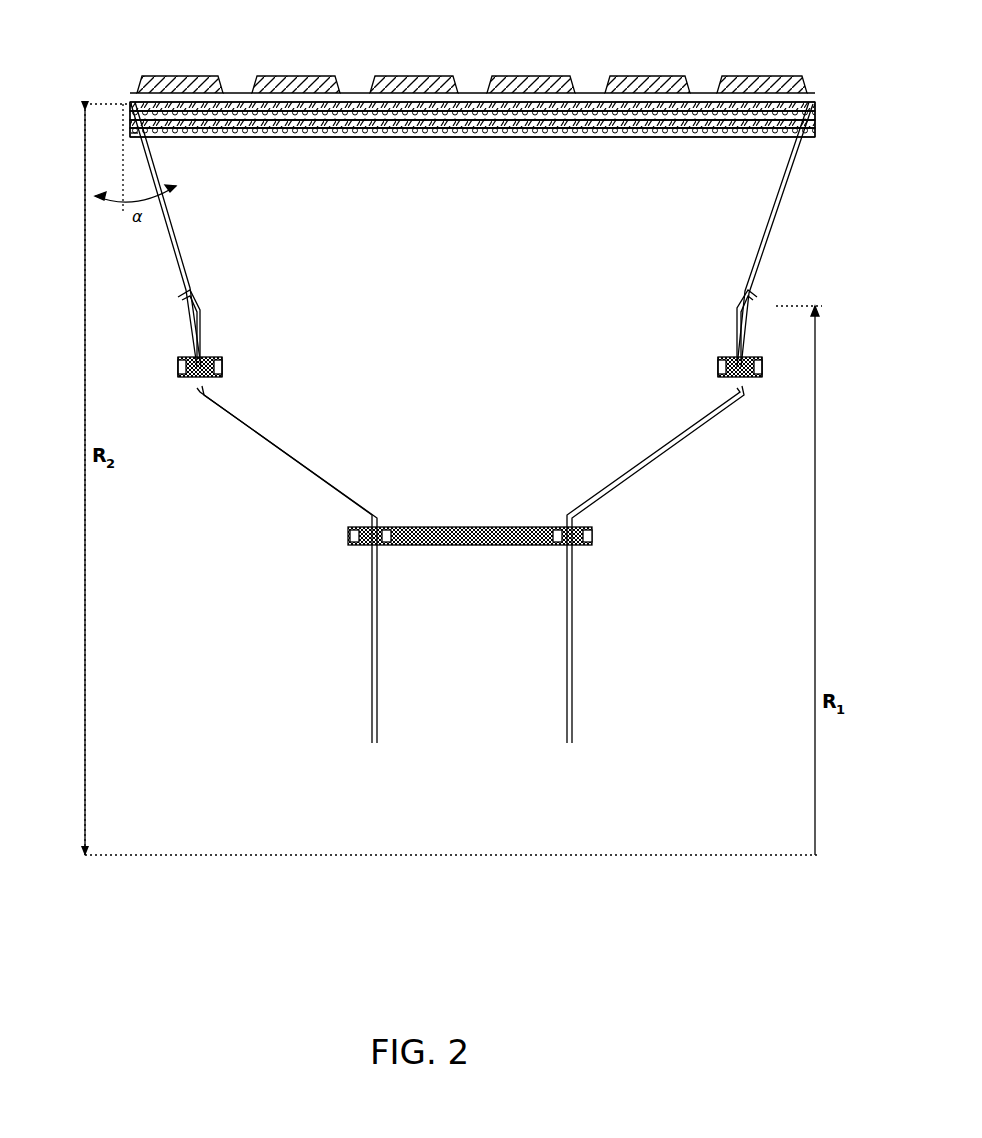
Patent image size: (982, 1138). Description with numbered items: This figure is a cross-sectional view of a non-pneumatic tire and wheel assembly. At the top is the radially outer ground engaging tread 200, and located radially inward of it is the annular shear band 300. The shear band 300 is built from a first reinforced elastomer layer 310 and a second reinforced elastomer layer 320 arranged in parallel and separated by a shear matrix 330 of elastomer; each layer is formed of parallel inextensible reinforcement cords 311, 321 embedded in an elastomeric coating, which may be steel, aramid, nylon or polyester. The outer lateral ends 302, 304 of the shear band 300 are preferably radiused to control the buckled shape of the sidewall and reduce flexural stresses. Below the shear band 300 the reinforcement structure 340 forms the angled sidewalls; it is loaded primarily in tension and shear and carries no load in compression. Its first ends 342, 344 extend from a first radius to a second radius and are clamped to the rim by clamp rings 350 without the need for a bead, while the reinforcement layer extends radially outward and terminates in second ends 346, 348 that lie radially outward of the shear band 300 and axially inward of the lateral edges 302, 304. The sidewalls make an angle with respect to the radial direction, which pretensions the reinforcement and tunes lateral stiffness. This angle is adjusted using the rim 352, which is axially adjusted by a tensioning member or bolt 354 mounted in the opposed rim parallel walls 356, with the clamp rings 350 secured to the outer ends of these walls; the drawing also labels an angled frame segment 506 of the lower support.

The tread 200 is at (443, 78).
The shear band 300 is at (478, 145).
The outer lateral end of shear band 302 is at (815, 101).
The outer lateral end of shear band 304 is at (135, 101).
The first reinforced elastomer layer 310 is at (296, 130).
The reinforcement cords 311 is at (383, 130).
The second reinforced elastomer layer 320 is at (357, 130).
The reinforcement cords 321 is at (418, 130).
The shear matrix 330 is at (636, 130).
The reinforcement structure 340 is at (180, 246).
The first end of reinforcement structure 342 is at (765, 300).
The first end of reinforcement structure 344 is at (190, 312).
The second end of reinforcement layer 346 is at (548, 78).
The second end of reinforcement layer 348 is at (395, 78).
The clamp rings 350 is at (183, 298).
The rim 352 is at (290, 500).
The tensioning member or bolt 354 is at (478, 526).
The rim parallel wall 356 is at (685, 440).
The angled frame segment 506 is at (252, 428).